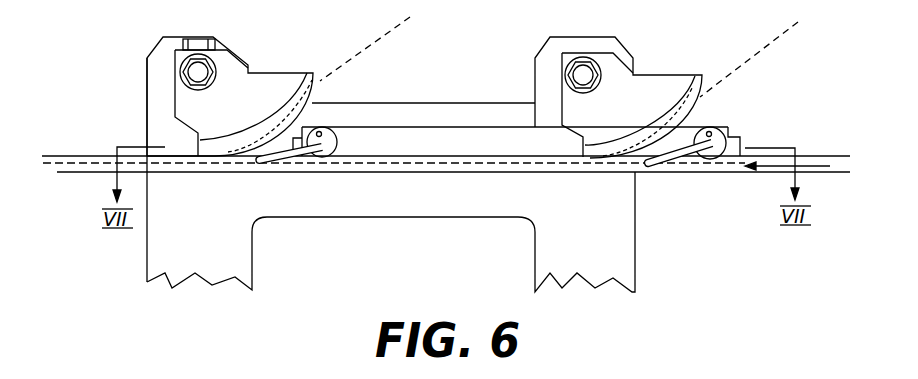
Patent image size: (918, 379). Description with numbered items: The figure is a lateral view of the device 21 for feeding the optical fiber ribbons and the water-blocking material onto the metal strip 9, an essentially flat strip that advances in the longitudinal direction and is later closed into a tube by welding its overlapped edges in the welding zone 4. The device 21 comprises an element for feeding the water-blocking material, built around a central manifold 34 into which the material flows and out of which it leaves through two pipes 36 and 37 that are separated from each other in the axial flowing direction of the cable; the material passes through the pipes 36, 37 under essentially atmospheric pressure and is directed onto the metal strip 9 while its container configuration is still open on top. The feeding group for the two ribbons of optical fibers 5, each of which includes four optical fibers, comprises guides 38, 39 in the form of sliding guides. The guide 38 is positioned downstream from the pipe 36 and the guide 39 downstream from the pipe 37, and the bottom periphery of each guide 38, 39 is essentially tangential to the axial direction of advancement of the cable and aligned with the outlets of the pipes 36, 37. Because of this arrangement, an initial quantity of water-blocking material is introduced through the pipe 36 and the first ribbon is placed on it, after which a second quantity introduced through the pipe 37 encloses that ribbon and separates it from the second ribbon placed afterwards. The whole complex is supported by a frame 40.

The welding zone 4 is at (762, 50).
The ribbons of optical fibers 5 is at (381, 38).
The metal strip 9 is at (723, 171).
The device for feeding the optical fiber ribbons and water-blocking material 21 is at (330, 278).
The central manifold 34 is at (433, 143).
The pipe 36 is at (671, 160).
The pipe 37 is at (289, 157).
The guide 38 is at (648, 88).
The guide 39 is at (268, 82).
The frame 40 is at (627, 257).